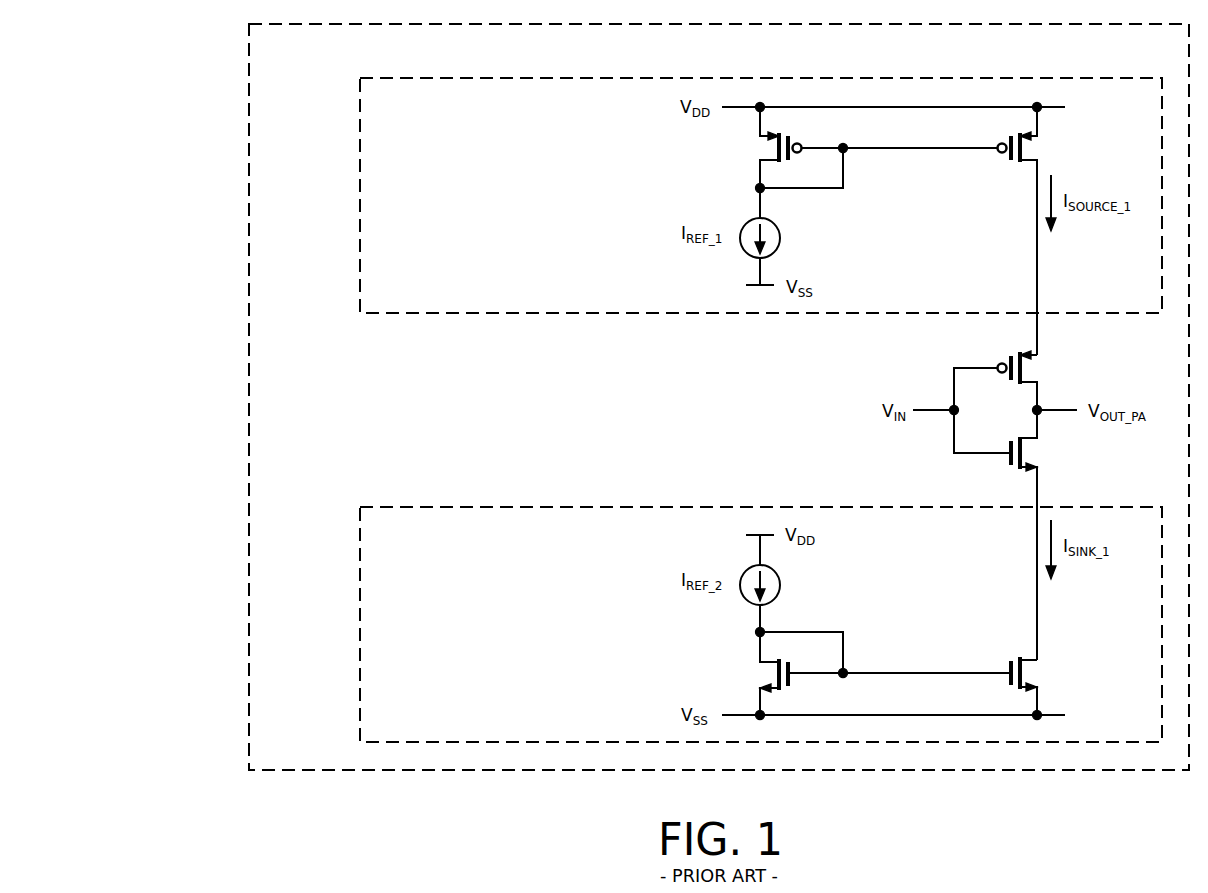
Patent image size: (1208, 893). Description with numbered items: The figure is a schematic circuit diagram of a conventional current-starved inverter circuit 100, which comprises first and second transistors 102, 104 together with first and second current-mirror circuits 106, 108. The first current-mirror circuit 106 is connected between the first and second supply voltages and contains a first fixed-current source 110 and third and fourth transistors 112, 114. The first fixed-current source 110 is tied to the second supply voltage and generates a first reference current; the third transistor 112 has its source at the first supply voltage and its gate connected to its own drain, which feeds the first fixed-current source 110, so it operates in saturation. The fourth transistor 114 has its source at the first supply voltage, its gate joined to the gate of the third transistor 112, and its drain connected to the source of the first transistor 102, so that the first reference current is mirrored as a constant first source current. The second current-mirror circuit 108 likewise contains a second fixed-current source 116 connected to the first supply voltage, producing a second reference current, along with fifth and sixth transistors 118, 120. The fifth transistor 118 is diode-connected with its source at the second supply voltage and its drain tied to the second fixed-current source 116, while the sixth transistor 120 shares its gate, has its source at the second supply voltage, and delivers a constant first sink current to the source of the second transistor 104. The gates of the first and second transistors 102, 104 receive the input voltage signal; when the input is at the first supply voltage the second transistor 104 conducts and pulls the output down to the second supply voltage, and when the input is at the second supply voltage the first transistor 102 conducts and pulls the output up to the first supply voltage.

The current-starved inverter circuit 100 is at (229, 60).
The first transistor 102 is at (1022, 370).
The second transistor 104 is at (1022, 454).
The first current-mirror circuit 106 is at (360, 233).
The second current-mirror circuit 108 is at (360, 595).
The first fixed-current source 110 is at (782, 243).
The third transistor 112 is at (778, 149).
The fourth transistor 114 is at (1022, 150).
The second fixed-current source 116 is at (782, 590).
The fifth transistor 118 is at (777, 674).
The sixth transistor 120 is at (1012, 658).